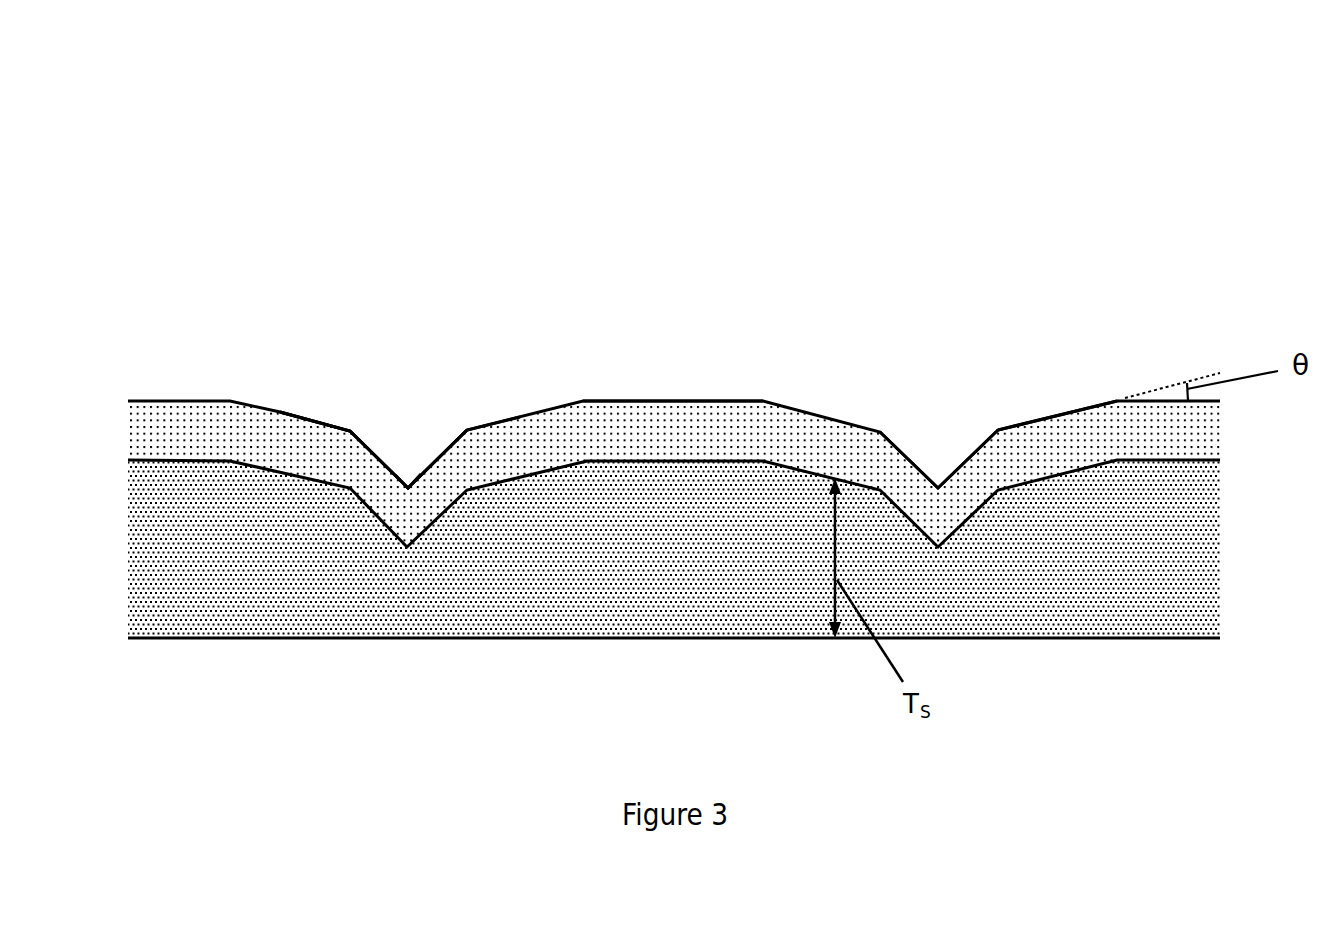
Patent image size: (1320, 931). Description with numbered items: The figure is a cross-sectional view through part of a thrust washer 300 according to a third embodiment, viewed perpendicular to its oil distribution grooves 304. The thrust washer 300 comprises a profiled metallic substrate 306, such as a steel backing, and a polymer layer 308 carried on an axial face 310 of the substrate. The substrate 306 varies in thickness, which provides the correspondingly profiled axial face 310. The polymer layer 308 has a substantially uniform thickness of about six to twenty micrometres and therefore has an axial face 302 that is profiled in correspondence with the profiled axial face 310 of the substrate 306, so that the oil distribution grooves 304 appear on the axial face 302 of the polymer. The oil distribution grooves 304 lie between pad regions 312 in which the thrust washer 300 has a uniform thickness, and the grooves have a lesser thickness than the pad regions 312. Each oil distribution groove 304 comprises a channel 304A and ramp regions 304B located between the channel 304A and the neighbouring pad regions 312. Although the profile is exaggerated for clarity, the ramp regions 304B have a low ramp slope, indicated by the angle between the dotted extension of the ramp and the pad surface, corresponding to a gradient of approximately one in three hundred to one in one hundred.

The thrust washer 300 is at (1123, 129).
The axial face of the polymer layer 302 is at (1069, 396).
The oil distribution grooves 304 is at (497, 238).
The channel 304A is at (416, 480).
The ramp regions 304B is at (280, 412).
The profiled metallic substrate 306 is at (187, 534).
The polymer layer 308 is at (187, 431).
The axial face of the substrate 310 is at (736, 448).
The pad regions 312 is at (673, 402).